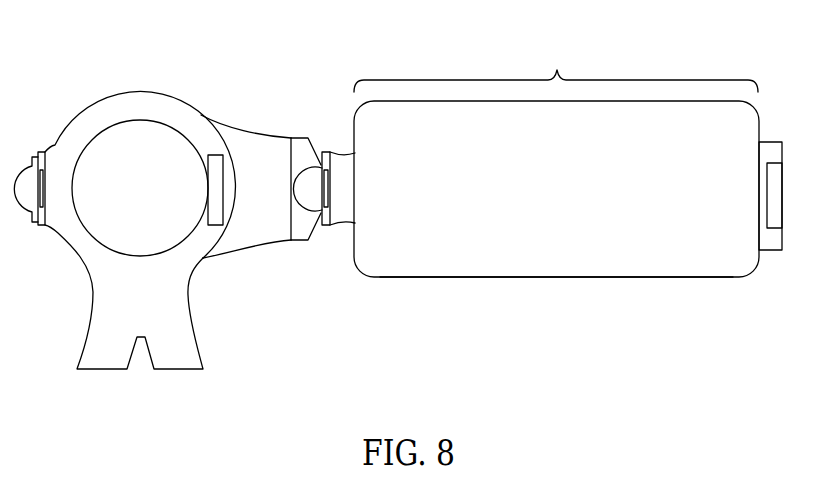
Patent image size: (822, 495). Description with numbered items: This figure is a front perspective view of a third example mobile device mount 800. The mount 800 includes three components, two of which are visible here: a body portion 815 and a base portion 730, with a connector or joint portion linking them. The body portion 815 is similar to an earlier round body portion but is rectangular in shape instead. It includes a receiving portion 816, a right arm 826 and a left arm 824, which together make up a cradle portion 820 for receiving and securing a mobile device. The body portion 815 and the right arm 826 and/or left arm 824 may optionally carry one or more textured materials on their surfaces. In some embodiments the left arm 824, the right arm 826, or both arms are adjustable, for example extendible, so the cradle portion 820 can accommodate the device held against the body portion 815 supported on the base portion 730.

The base portion 730 is at (190, 89).
The mobile device mount 800 is at (635, 69).
The cradle portion 820 is at (556, 68).
The body portion 815 is at (572, 198).
The receiving portion 816 is at (420, 273).
The left arm 824 is at (770, 250).
The right arm 826 is at (312, 189).